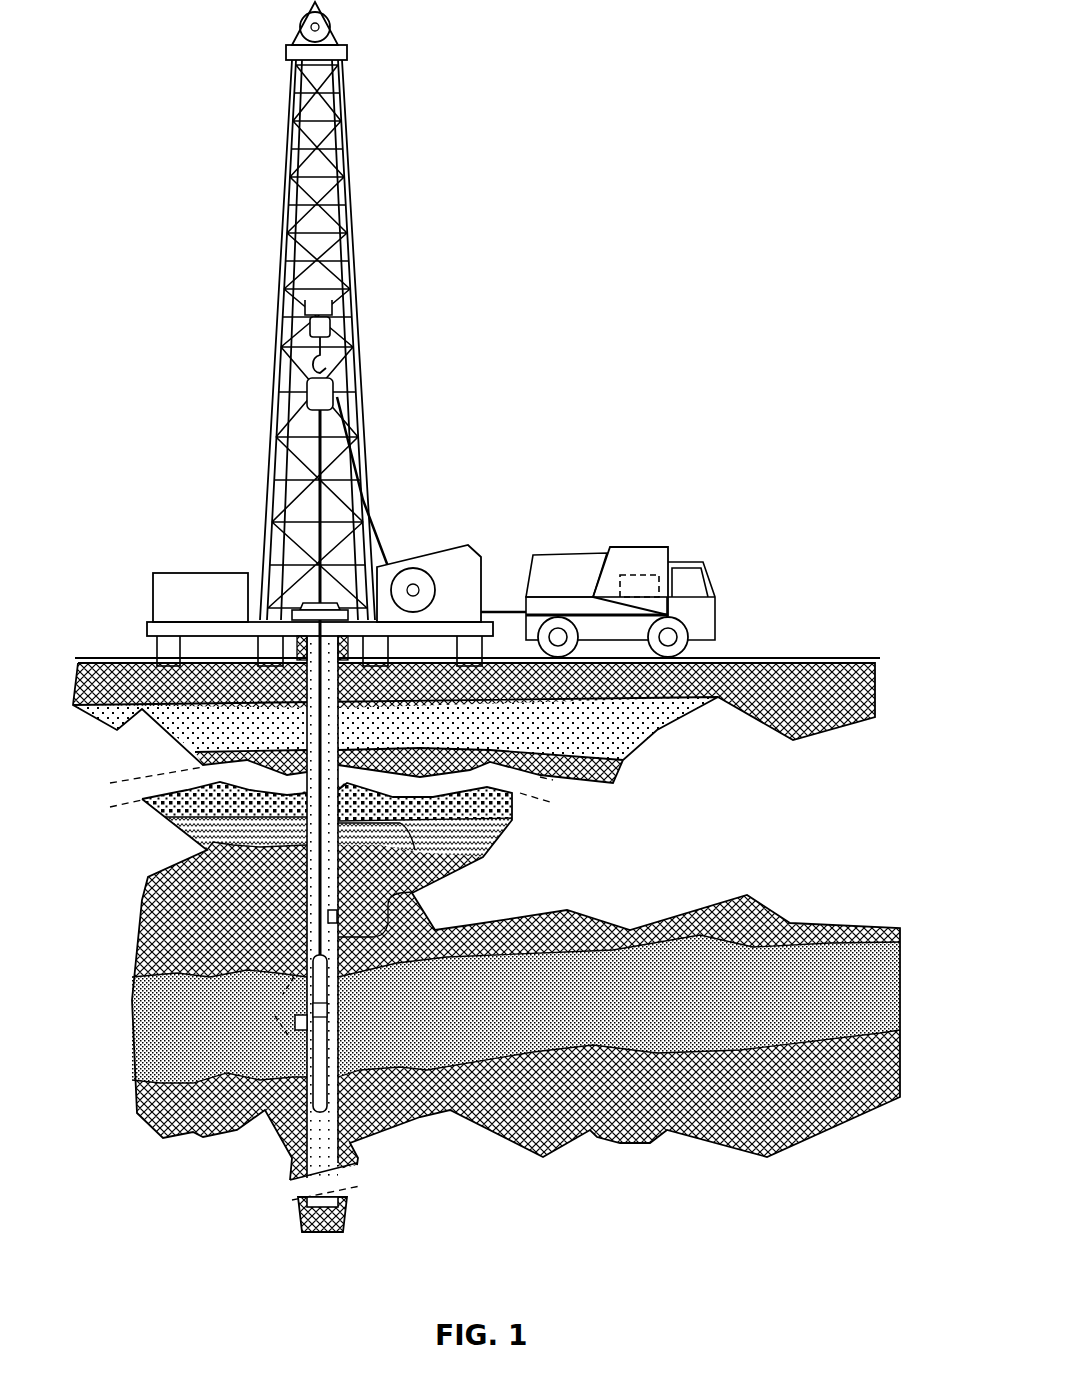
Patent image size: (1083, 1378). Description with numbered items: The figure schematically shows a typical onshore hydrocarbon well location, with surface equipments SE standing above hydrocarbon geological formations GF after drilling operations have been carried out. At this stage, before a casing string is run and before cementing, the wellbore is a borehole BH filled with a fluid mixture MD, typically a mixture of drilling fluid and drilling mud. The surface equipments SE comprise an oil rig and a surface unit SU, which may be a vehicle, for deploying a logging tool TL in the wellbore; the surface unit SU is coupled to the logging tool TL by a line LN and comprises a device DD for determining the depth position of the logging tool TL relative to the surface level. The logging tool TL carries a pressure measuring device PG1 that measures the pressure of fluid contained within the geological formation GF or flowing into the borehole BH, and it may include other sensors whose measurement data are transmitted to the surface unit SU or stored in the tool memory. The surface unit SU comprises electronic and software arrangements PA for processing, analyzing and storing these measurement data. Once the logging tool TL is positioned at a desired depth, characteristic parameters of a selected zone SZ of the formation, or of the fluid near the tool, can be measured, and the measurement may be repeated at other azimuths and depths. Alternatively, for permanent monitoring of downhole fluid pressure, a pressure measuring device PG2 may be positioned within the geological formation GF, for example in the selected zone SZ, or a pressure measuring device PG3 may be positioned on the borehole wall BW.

The surface equipments SE is at (545, 228).
The device for determining depth position DD is at (413, 568).
The surface unit SU is at (638, 553).
The electronic and software arrangements PA is at (652, 583).
The hydrocarbon geological formations GF is at (141, 848).
The line LN is at (338, 845).
The borehole wall BW is at (412, 892).
The pressure measuring device PG3 is at (328, 912).
The selected zone SZ is at (272, 998).
The pressure measuring device PG2 is at (295, 1022).
The logging tool TL is at (305, 1042).
The pressure measuring device PG1 is at (322, 1010).
The fluid mixture MD is at (315, 1142).
The borehole BH is at (325, 1172).